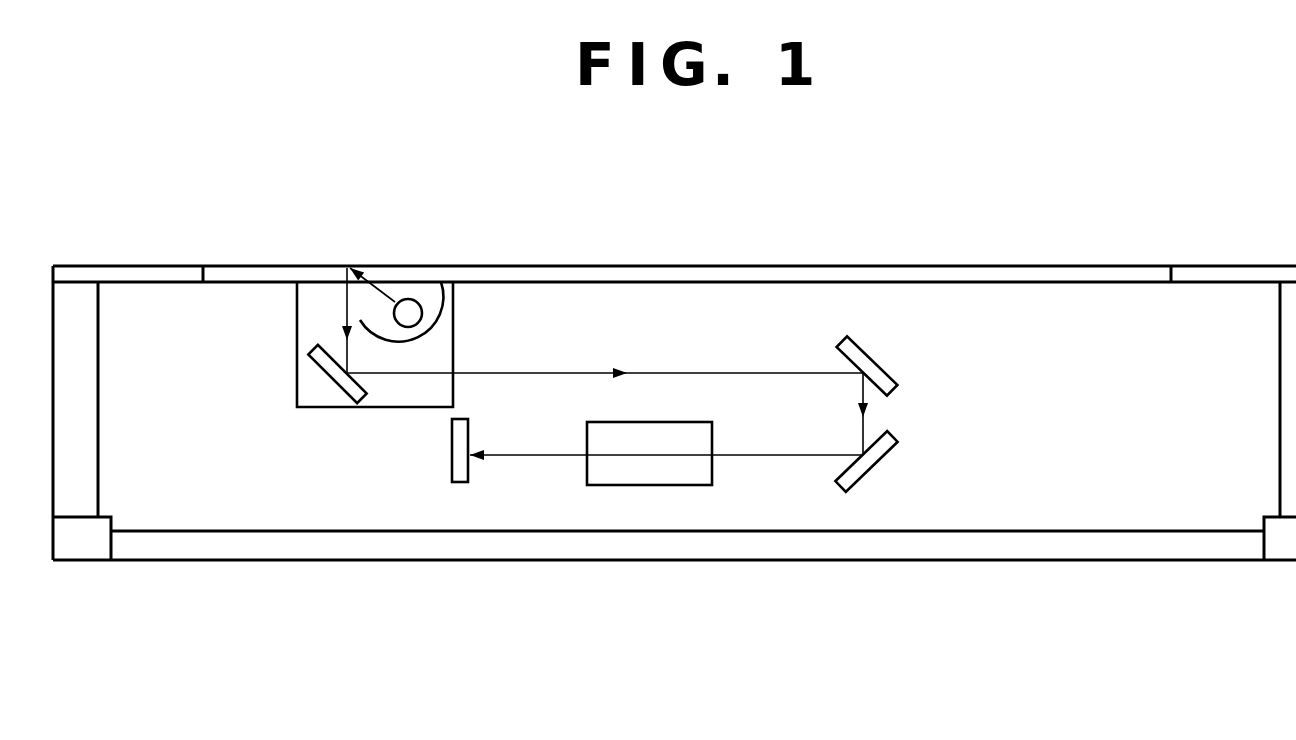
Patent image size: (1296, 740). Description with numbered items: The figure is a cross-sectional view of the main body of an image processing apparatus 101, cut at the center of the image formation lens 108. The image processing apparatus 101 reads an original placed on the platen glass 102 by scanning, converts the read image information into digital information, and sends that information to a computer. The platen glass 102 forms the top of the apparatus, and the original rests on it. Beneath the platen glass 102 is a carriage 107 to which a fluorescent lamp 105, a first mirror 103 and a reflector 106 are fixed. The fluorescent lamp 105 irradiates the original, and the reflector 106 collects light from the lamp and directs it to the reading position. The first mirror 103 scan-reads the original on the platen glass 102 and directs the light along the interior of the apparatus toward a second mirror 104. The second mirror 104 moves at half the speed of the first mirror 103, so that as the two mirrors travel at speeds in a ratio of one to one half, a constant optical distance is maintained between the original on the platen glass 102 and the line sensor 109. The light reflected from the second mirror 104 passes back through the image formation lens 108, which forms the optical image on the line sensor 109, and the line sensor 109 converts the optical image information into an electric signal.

The image processing apparatus 101 is at (1017, 492).
The platen glass 102 is at (1097, 266).
The first mirror 103 is at (322, 372).
The second mirror 104 is at (862, 343).
The fluorescent lamp 105 is at (411, 299).
The reflector 106 is at (437, 328).
The carriage 107 is at (392, 407).
The image formation lens 108 is at (683, 485).
The line sensor 109 is at (460, 482).